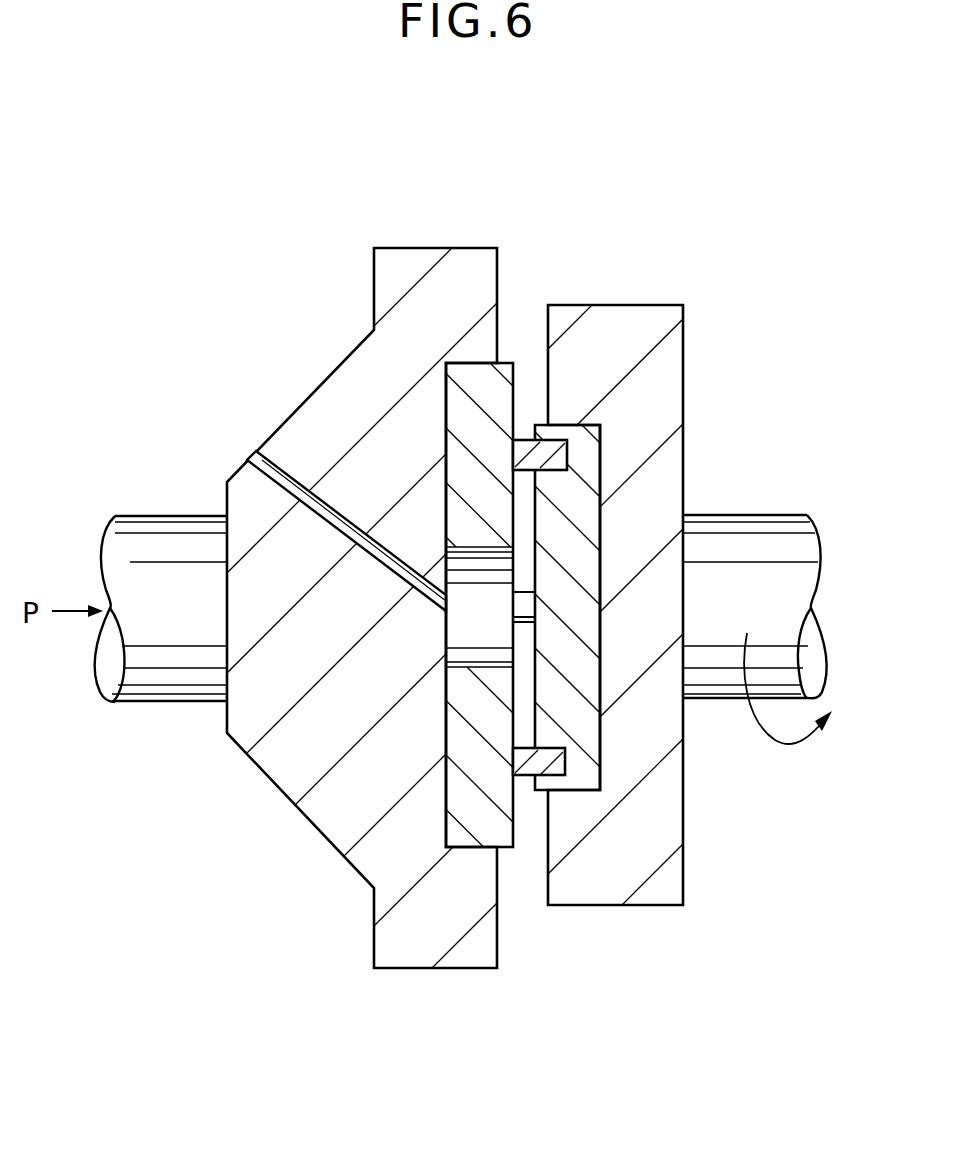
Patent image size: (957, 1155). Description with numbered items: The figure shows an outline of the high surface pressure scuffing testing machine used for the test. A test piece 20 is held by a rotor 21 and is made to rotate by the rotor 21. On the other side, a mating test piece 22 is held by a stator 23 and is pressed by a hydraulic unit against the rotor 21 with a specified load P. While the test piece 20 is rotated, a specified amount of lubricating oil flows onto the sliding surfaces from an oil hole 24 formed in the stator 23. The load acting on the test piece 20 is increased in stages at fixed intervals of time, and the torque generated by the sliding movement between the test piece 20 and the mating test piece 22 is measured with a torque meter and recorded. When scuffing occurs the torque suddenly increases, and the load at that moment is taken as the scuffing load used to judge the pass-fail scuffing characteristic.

The test piece 20 is at (525, 770).
The rotor 21 is at (689, 364).
The mating test piece 22 is at (472, 380).
The stator 23 is at (296, 398).
The oil hole 24 is at (324, 513).